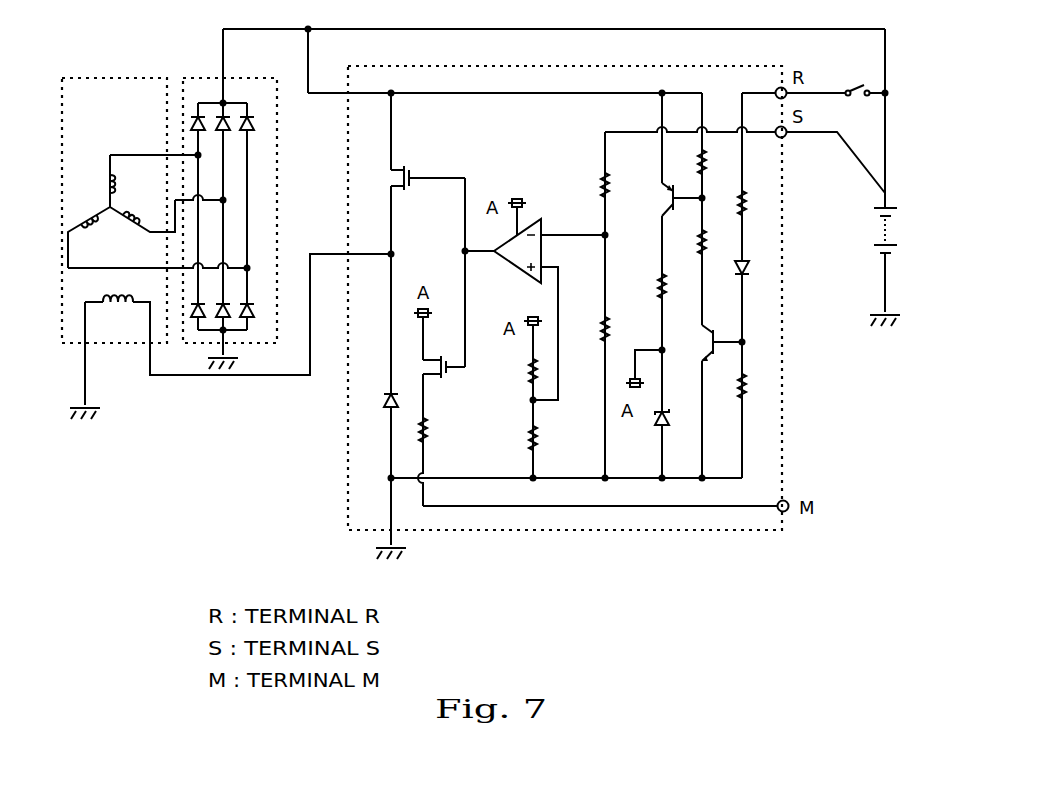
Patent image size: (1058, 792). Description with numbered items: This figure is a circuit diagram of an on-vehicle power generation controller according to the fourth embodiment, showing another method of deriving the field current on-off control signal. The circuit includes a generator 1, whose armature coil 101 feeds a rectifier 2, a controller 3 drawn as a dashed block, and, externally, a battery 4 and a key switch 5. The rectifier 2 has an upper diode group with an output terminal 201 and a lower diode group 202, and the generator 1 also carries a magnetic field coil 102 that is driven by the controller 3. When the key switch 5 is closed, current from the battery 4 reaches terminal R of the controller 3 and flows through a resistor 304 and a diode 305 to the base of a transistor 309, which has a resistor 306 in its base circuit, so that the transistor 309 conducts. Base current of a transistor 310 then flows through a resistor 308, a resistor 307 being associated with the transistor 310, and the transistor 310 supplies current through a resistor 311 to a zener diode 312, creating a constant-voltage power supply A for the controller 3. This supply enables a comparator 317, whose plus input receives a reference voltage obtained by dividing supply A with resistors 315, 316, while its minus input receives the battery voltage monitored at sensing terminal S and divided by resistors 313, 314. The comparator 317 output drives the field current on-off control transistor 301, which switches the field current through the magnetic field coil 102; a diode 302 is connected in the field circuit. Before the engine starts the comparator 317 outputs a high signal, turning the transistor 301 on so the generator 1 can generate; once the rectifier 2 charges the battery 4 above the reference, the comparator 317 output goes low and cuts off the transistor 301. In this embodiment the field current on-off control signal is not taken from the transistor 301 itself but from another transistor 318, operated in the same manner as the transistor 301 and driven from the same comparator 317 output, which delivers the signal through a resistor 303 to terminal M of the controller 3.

The generator 1 is at (114, 200).
The rectifier 2 is at (230, 200).
The controller 3 is at (565, 325).
The battery 4 is at (872, 230).
The key switch 5 is at (858, 79).
The armature coil 101 is at (121, 207).
The magnetic field coil 102 is at (117, 316).
The output terminal 201 is at (254, 123).
The diodes 202 is at (240, 337).
The field current on-off control transistor 301 is at (409, 178).
The diode 302 is at (374, 417).
The resistor 303 is at (442, 430).
The resistor 304 is at (759, 212).
The diode 305 is at (757, 280).
The resistor 306 is at (759, 394).
The resistor 307 is at (719, 171).
The resistor 308 is at (719, 233).
The transistor 309 is at (722, 350).
The transistor 310 is at (662, 199).
The resistor 311 is at (642, 286).
The zener diode 312 is at (647, 430).
The resistor 313 is at (582, 185).
The resistor 314 is at (587, 320).
The resistor 315 is at (510, 372).
The resistor 316 is at (516, 449).
The comparator 317 is at (516, 260).
The transistor 318 is at (444, 378).